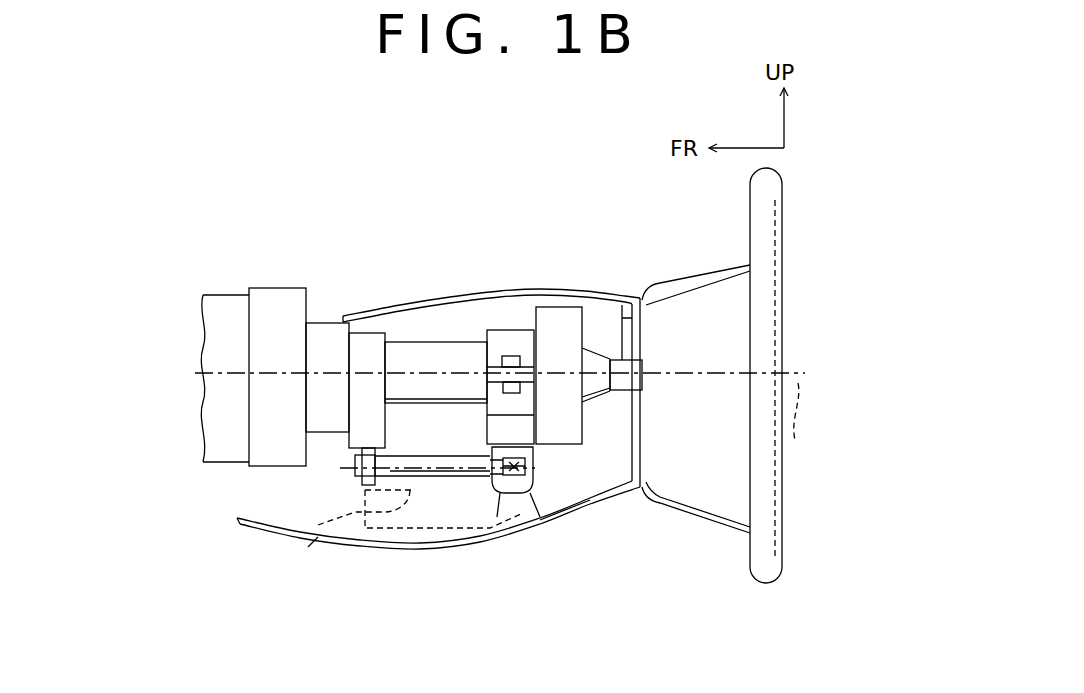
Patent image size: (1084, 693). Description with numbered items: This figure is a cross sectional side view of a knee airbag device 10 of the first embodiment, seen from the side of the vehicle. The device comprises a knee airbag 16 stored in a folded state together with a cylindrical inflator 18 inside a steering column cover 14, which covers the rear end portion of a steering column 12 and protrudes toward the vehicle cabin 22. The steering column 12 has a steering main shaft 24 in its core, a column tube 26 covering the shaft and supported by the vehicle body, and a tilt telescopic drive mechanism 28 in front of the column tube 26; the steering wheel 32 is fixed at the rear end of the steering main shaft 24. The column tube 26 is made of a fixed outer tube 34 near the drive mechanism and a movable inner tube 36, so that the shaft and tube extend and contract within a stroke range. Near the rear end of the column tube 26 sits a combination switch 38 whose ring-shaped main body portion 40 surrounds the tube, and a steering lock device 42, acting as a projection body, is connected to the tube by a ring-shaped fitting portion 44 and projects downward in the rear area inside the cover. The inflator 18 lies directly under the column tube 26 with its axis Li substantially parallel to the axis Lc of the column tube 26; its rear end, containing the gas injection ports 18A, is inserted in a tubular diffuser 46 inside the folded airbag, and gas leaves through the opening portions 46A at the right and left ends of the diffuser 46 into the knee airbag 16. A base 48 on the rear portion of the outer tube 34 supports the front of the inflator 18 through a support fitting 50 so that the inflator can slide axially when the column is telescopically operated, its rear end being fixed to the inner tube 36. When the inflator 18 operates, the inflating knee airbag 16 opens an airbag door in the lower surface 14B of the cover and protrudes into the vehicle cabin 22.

The knee airbag device 10 is at (375, 558).
The steering column 12 is at (438, 403).
The steering column cover 14 is at (452, 294).
The lower surface 14B is at (452, 547).
The knee airbag 16 is at (492, 527).
The inflator 18 is at (440, 483).
The gas injection ports 18A is at (530, 466).
The vehicle cabin 22 is at (662, 570).
The steering main shaft 24 is at (622, 368).
The column tube 26 is at (408, 252).
The tilt telescopic drive mechanism 28 is at (233, 295).
The steering wheel 32 is at (782, 274).
The outer tube 34 is at (326, 322).
The inner tube 36 is at (418, 342).
The combination switch 38 is at (565, 307).
The main body portion 40 is at (584, 425).
The steering lock device 42 is at (557, 523).
The fitting portion 44 is at (507, 330).
The diffuser 46 is at (409, 490).
The opening portions 46A is at (494, 466).
The base 48 is at (347, 439).
The support fitting 50 is at (356, 468).
The axis of the inflator Li is at (307, 560).
The axis of the column tube Lc is at (804, 429).